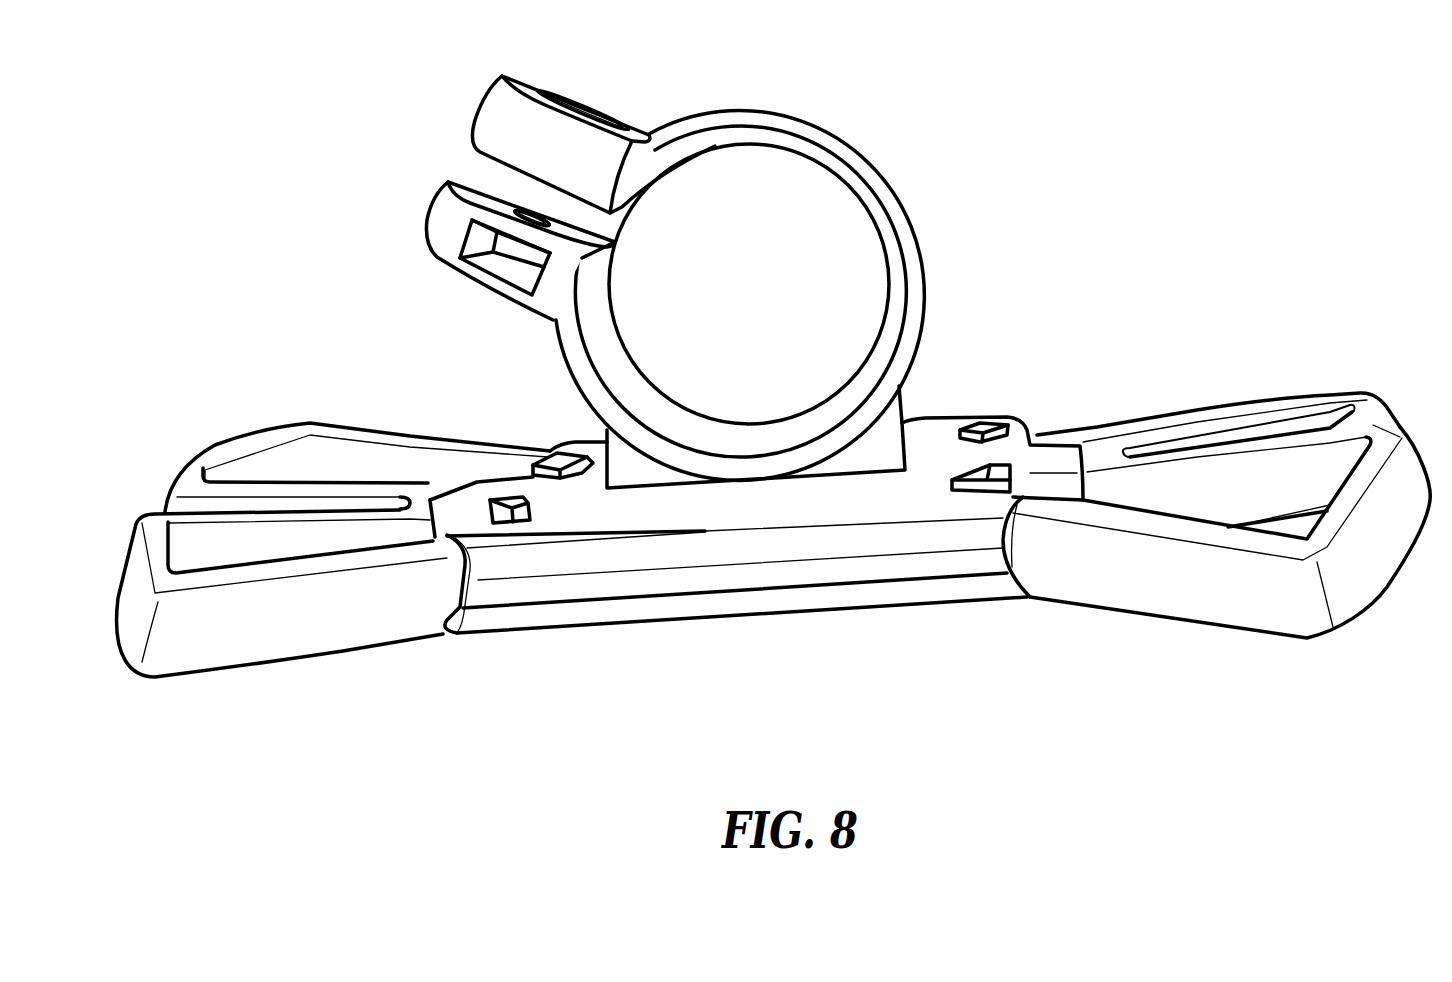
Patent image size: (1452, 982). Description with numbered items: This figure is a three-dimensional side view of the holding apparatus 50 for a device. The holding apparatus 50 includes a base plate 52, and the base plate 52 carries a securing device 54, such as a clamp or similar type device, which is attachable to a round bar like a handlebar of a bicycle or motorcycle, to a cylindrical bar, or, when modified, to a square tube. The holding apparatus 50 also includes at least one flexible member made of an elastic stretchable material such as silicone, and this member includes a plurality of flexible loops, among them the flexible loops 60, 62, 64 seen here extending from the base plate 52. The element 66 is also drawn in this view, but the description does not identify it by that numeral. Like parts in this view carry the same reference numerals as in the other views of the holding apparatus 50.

The holding apparatus 50 is at (1109, 163).
The base plate 52 is at (947, 415).
The securing device 54 is at (819, 131).
The flexible loop 60 is at (1322, 646).
The flexible loop 62 is at (258, 655).
The flexible loop 64 is at (273, 432).
The bar 66 is at (943, 595).